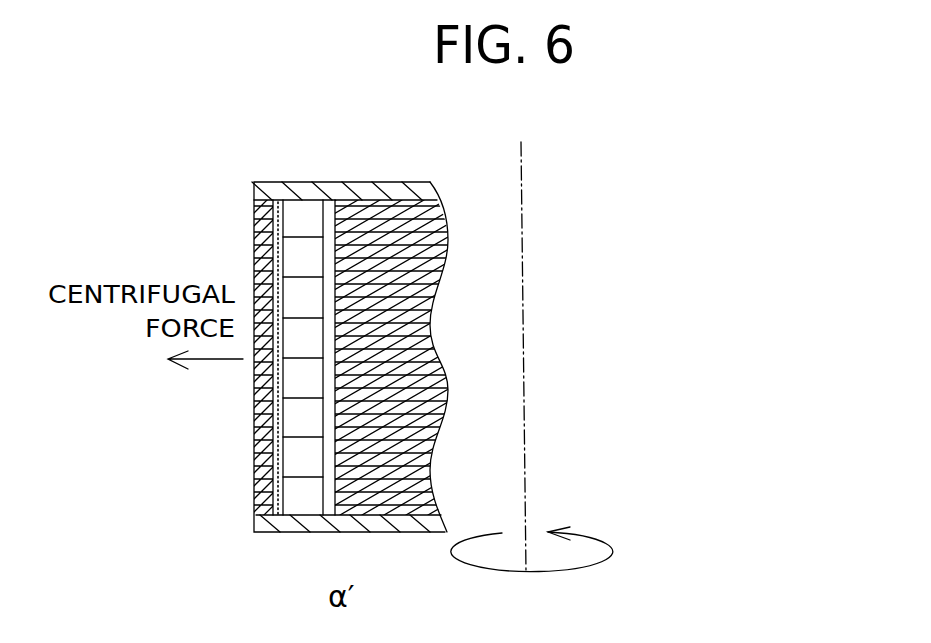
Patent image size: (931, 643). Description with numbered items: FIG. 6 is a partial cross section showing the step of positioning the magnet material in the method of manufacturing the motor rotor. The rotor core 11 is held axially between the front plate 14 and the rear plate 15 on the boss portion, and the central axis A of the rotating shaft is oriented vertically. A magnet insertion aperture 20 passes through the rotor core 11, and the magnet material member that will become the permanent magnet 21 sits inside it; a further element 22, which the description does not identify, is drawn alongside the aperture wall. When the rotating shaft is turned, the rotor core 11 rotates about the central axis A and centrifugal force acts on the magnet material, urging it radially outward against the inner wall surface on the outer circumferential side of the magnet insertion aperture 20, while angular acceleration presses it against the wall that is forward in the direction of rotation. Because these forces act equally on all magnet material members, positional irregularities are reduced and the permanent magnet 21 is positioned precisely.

The rotor core 11 is at (253, 453).
The front plate 14 is at (380, 522).
The rear plate 15 is at (386, 192).
The magnet insertion aperture 20 is at (328, 210).
The permanent magnet 21 is at (308, 498).
The adhesive layer 22 is at (283, 515).
The central axis A is at (530, 198).